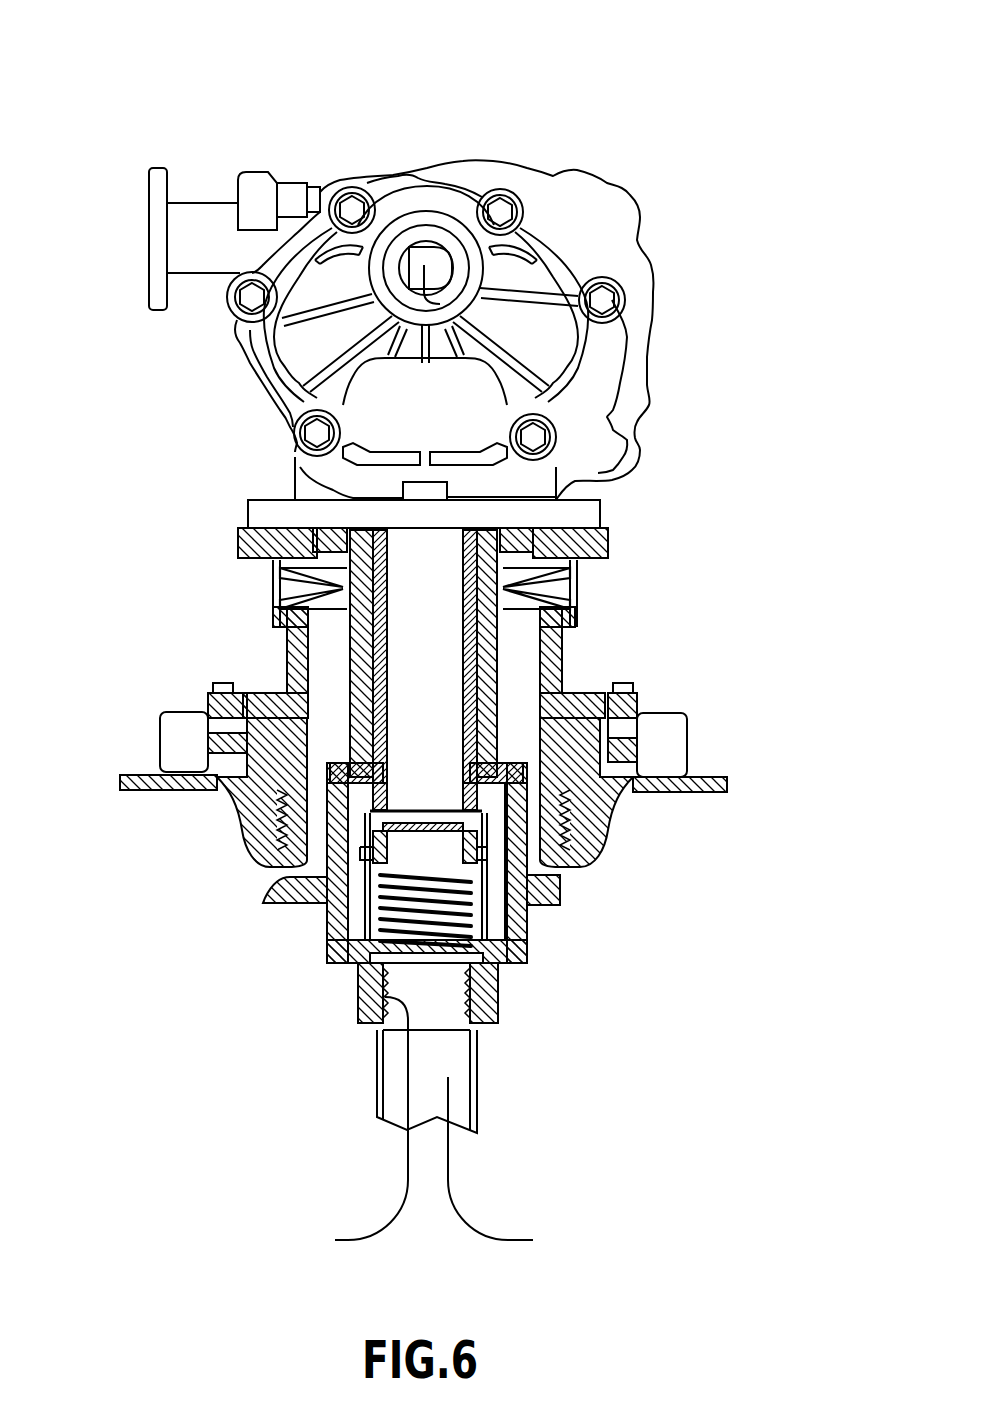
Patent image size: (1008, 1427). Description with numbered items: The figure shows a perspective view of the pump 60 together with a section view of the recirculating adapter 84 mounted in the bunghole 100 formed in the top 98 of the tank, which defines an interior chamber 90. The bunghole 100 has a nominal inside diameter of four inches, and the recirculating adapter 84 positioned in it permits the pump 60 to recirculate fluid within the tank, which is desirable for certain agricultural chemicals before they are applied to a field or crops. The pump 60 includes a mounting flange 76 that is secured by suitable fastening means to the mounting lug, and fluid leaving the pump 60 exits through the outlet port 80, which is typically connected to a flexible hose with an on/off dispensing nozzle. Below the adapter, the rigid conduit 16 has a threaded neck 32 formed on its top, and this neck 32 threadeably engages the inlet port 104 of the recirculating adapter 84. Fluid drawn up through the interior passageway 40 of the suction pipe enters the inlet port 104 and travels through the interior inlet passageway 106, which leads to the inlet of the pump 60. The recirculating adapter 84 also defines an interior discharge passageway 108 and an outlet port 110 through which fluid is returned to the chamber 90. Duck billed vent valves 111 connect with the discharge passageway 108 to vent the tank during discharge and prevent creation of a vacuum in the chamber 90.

The pump 60 is at (456, 195).
The outlet port 80 is at (440, 304).
The mounting flange 76 is at (582, 522).
The duck billed vent valves 111 is at (745, 579).
The interior discharge passageway 108 is at (333, 660).
The interior inlet passageway 106 is at (490, 916).
The top 98 is at (727, 785).
The interior chamber 90 is at (707, 855).
The recirculating adapter 84 is at (240, 803).
The bunghole 100 is at (575, 833).
The outlet port 110 is at (263, 900).
The inlet port 104 is at (500, 1005).
The rigid conduit 16 is at (477, 1107).
The threaded neck 32 is at (335, 1241).
The interior passageway 40 is at (533, 1241).